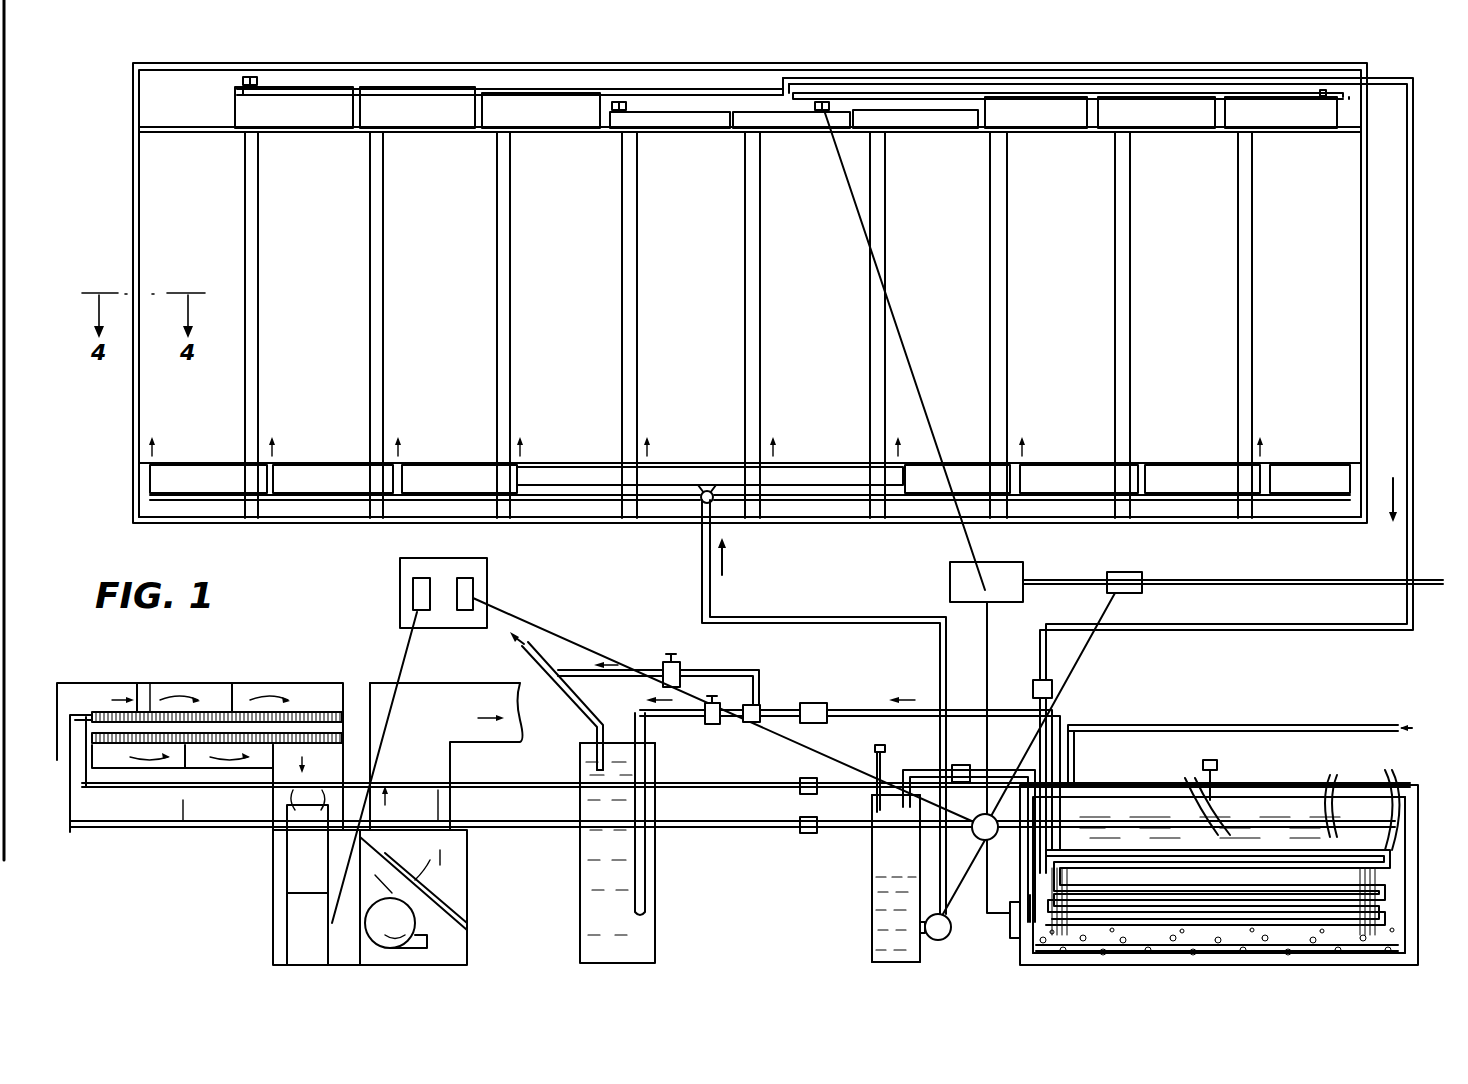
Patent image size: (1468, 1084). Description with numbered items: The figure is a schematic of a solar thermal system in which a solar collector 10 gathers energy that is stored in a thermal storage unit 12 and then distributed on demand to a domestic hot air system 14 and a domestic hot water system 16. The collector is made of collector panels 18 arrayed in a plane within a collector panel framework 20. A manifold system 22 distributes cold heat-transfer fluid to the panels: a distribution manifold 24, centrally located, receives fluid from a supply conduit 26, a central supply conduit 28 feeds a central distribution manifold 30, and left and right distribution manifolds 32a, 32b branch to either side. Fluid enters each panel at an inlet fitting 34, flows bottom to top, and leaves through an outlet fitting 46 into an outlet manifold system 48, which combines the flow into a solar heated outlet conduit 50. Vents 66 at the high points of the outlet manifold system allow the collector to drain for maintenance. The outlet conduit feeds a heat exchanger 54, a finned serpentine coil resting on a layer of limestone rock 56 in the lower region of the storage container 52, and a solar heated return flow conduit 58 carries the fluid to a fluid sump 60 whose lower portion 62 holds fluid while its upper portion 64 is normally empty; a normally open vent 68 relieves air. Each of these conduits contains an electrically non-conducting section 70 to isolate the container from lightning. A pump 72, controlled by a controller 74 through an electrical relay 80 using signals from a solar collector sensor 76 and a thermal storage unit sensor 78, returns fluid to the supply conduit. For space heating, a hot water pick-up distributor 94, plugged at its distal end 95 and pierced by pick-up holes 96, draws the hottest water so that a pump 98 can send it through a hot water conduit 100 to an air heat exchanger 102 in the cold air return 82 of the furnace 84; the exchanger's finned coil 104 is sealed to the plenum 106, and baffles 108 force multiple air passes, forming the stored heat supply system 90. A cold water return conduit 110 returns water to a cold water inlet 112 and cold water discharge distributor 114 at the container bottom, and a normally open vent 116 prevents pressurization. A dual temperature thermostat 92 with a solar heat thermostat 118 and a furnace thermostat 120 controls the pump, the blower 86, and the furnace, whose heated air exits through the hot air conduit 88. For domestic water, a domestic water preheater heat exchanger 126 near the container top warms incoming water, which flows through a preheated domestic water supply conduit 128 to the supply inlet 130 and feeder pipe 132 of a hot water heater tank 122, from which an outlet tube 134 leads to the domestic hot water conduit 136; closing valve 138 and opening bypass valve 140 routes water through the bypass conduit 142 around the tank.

The solar collector 10 is at (378, 531).
The thermal storage unit 12 is at (1318, 770).
The domestic hot air system 14 is at (320, 684).
The domestic hot water system 16 is at (658, 855).
The collector panels 18 is at (192, 256).
The collector panel framework 20 is at (136, 515).
The manifold system 22 is at (717, 503).
The distribution manifold 24 is at (712, 492).
The supply conduit 26 is at (712, 600).
The central supply conduit 28 is at (702, 502).
The central distribution manifold 30 is at (662, 468).
The left distribution manifold 32a is at (445, 507).
The right distribution manifold 32b is at (1027, 504).
The inlet fitting 34 is at (156, 480).
The outlet fitting 46 is at (232, 128).
The outlet manifold system 48 is at (740, 94).
The solar heated outlet conduit 50 is at (1407, 213).
The storage container 52 is at (1335, 958).
The heat exchanger 54 is at (1380, 872).
The limestone rock 56 is at (1035, 900).
The solar heated return flow conduit 58 is at (1010, 770).
The fluid sump 60 is at (872, 893).
The lower portion 62 is at (870, 930).
The upper portion 64 is at (872, 817).
The vents 66 is at (257, 85).
The normally open vent 68 is at (875, 746).
The electrically non-conducting section 70 is at (815, 703).
The pump 72 is at (942, 940).
The controller 74 is at (958, 562).
The solar collector sensor 76 is at (817, 112).
The thermal storage unit sensor 78 is at (1012, 940).
The electrical relay 80 is at (1127, 572).
The cold air return 82 is at (62, 683).
The furnace 84 is at (272, 868).
The blower 86 is at (365, 924).
The hot air conduit 88 is at (384, 686).
The stored heat supply system 90 is at (210, 686).
The dual temperature thermostat 92 is at (480, 558).
The hot water pick-up distributor 94 is at (1340, 800).
The distal end 95 is at (1397, 798).
The pick-up holes 96 is at (1185, 778).
The pump 98 is at (974, 820).
The hot water conduit 100 is at (745, 840).
The air heat exchanger 102 is at (178, 683).
The finned coil 104 is at (138, 683).
The plenum 106 is at (300, 683).
The baffles 108 is at (150, 683).
The cold water return conduit 110 is at (720, 782).
The cold water inlet 112 is at (1400, 952).
The cold water discharge distributor 114 is at (1182, 958).
The normally open vent 116 is at (1217, 762).
The solar heat thermostat 118 is at (475, 581).
The furnace thermostat 120 is at (413, 598).
The hot water heater tank 122 is at (580, 883).
The domestic water preheater heat exchanger 126 is at (1410, 812).
The preheated domestic water supply conduit 128 is at (868, 708).
The supply inlet 130 is at (648, 743).
The feeder pipe 132 is at (648, 886).
The outlet tube 134 is at (595, 736).
The domestic hot water conduit 136 is at (538, 655).
The valve 138 is at (722, 726).
The bypass valve 140 is at (681, 671).
The bypass conduit 142 is at (650, 668).